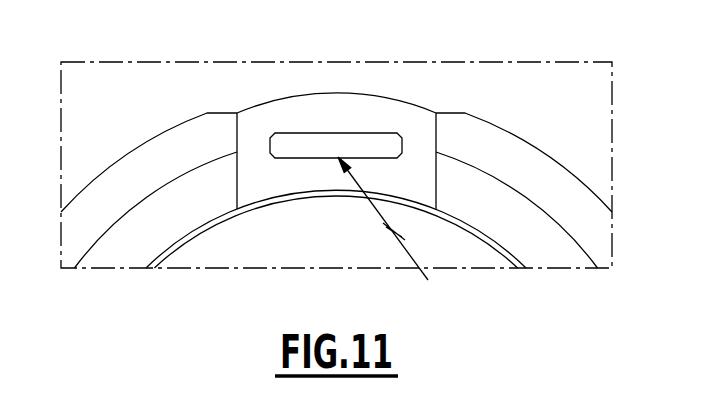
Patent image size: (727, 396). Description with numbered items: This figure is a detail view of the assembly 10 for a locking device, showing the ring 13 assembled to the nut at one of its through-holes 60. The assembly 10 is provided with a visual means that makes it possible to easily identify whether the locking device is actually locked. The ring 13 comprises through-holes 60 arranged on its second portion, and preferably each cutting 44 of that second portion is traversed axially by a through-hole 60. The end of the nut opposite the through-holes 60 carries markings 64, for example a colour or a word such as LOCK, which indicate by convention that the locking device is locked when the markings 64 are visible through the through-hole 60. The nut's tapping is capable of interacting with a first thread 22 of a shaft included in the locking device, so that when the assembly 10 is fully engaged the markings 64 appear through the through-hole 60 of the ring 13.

The assembly 10 is at (336, 165).
The ring 13 is at (537, 149).
The first thread 22 is at (335, 94).
The cutting 44 is at (265, 187).
The through-hole 60 is at (397, 137).
The markings 64 is at (396, 233).